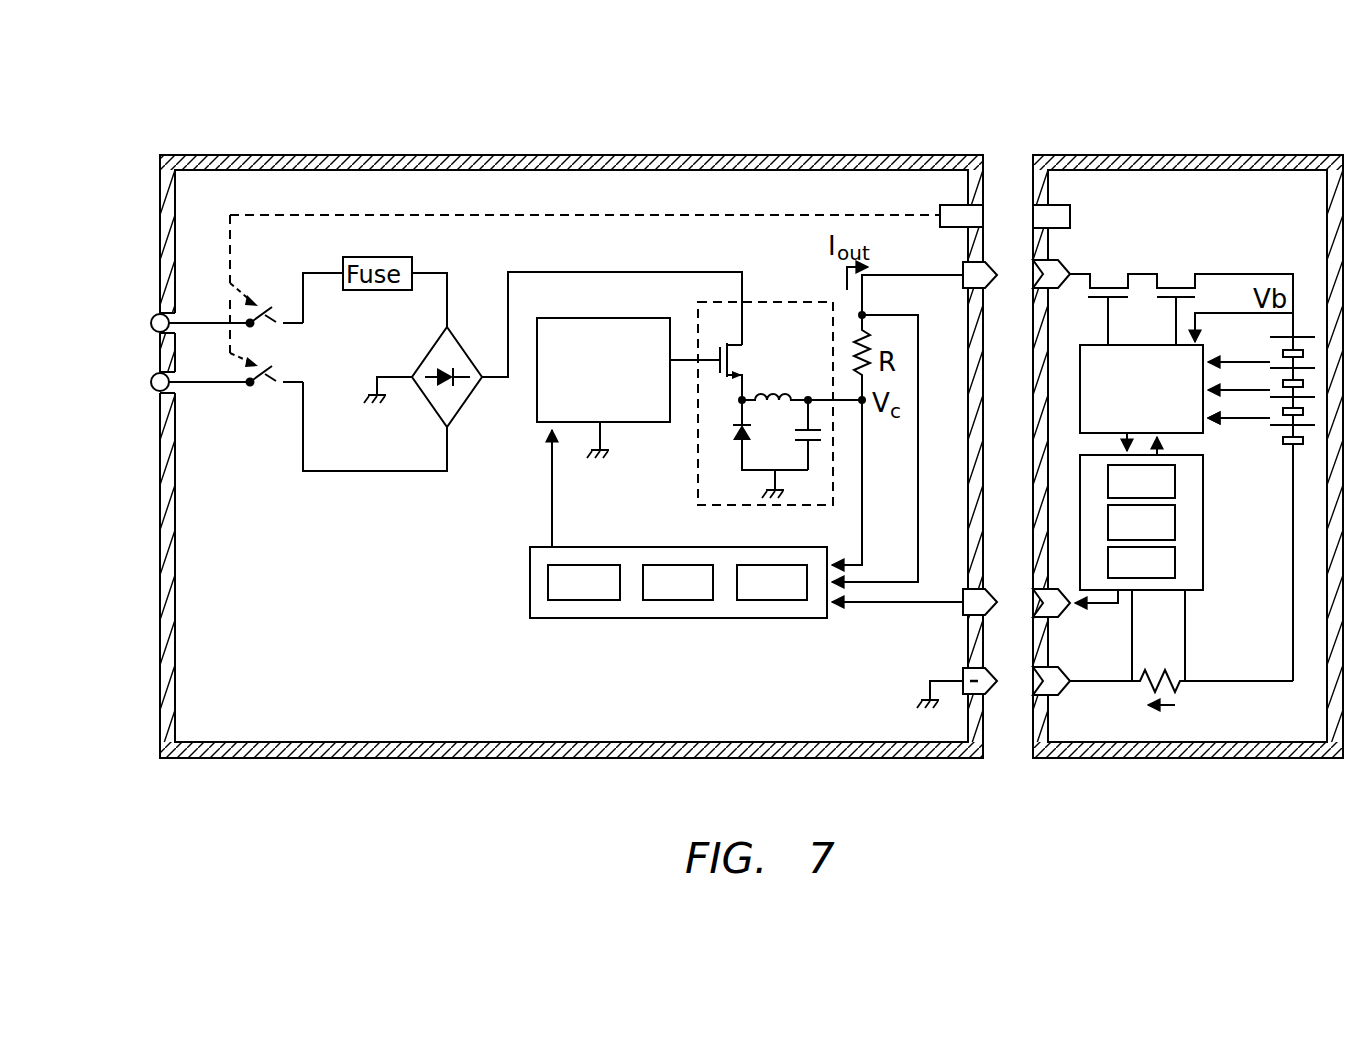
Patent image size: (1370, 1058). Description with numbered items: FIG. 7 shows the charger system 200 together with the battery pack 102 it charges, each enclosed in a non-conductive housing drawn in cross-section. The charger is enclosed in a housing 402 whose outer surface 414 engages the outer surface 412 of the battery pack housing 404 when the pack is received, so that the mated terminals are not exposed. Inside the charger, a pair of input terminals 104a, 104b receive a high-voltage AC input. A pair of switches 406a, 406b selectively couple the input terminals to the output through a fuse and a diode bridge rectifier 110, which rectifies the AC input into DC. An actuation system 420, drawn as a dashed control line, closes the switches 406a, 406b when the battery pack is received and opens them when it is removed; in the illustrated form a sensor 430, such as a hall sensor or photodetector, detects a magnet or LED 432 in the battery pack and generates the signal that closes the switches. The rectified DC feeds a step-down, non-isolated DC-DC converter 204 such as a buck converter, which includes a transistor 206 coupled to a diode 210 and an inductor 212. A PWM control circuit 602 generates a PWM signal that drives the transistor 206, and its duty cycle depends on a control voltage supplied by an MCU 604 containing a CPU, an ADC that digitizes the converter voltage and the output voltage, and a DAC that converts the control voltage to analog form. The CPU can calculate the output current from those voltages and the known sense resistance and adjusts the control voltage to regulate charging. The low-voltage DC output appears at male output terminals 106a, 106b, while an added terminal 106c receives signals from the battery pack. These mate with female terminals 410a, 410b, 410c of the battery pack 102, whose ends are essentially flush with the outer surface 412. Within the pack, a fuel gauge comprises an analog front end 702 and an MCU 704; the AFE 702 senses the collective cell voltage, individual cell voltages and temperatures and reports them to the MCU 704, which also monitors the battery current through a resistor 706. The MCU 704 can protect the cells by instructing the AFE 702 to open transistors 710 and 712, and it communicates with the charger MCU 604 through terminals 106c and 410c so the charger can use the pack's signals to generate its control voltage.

The battery charger 200 is at (522, 102).
The battery pack 102 is at (1183, 95).
The housing 402 is at (587, 155).
The housing 404 is at (1230, 155).
The outer surface 414 is at (985, 155).
The outer surface 412 is at (1033, 155).
The actuation system 420 is at (650, 215).
The sensor 430 is at (945, 210).
The magnet 432 is at (1072, 216).
The input terminal 104a is at (158, 318).
The input terminal 104b is at (158, 390).
The switch 406a is at (267, 300).
The switch 406b is at (268, 392).
The diode bridge rectifier 110 is at (428, 350).
The PWM control circuit 602 is at (620, 318).
The non-isolated DC-DC converter 204 is at (780, 379).
The transistor 206 is at (735, 358).
The inductor 212 is at (778, 395).
The diode 210 is at (748, 434).
The MCU 604 is at (530, 580).
The output terminal 106a is at (960, 282).
The output terminal 106b is at (960, 678).
The terminal 106c is at (960, 612).
The female terminal 410a is at (1070, 268).
The female terminal 410b is at (1070, 695).
The terminal 410c is at (1070, 618).
The analog front end 702 is at (1141, 390).
The MCU 704 is at (1205, 522).
The resistor 706 is at (1158, 668).
The transistor 710 is at (1090, 298).
The transistor 712 is at (1165, 298).